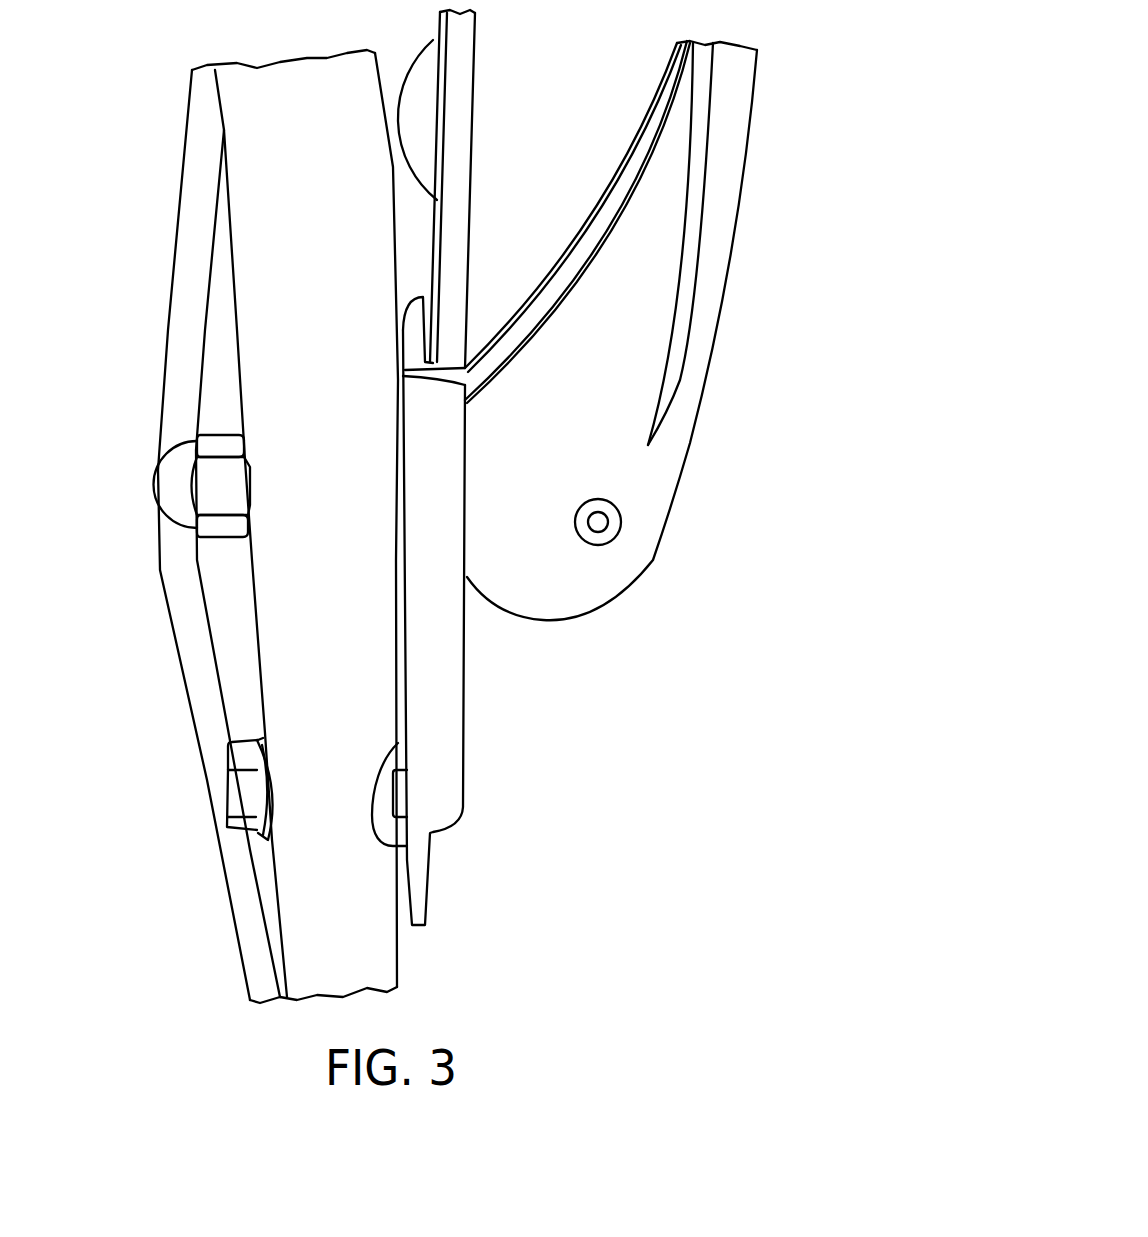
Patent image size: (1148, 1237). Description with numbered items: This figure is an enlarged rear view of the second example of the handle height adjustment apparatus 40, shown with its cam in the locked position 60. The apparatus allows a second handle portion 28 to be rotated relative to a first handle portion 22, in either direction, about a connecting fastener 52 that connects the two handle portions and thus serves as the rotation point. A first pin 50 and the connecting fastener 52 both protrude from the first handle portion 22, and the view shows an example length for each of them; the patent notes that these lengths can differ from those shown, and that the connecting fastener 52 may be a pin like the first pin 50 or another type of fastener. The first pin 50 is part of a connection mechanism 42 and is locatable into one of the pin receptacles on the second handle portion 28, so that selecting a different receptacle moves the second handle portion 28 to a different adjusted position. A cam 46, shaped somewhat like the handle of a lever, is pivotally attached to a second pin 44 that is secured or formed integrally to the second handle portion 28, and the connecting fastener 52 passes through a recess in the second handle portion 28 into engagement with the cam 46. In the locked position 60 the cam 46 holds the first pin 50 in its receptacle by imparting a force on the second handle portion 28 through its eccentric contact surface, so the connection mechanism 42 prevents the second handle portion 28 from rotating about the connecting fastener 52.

The first handle portion 22 is at (271, 82).
The second handle portion 28 is at (462, 672).
The handle height adjustment apparatus 40 is at (702, 322).
The connection mechanism 42 is at (493, 467).
The second pin 44 is at (594, 499).
The cam 46 is at (717, 260).
The first pin 50 is at (230, 798).
The connecting fastener 52 is at (153, 480).
The locked position 60 is at (610, 128).